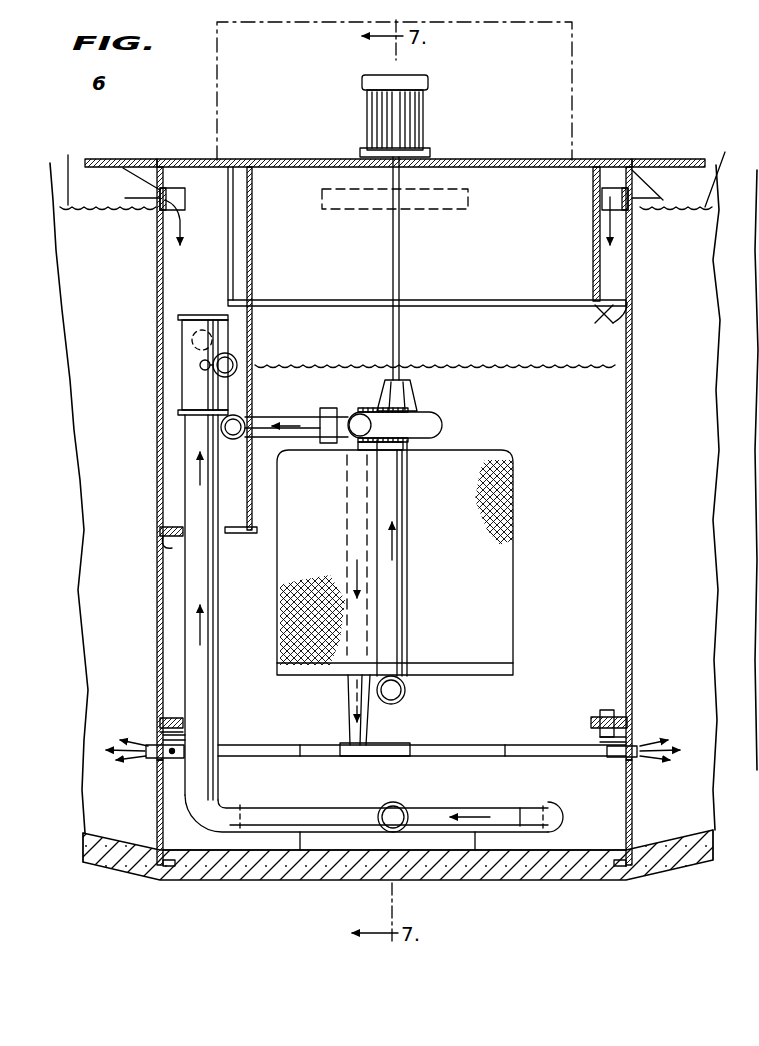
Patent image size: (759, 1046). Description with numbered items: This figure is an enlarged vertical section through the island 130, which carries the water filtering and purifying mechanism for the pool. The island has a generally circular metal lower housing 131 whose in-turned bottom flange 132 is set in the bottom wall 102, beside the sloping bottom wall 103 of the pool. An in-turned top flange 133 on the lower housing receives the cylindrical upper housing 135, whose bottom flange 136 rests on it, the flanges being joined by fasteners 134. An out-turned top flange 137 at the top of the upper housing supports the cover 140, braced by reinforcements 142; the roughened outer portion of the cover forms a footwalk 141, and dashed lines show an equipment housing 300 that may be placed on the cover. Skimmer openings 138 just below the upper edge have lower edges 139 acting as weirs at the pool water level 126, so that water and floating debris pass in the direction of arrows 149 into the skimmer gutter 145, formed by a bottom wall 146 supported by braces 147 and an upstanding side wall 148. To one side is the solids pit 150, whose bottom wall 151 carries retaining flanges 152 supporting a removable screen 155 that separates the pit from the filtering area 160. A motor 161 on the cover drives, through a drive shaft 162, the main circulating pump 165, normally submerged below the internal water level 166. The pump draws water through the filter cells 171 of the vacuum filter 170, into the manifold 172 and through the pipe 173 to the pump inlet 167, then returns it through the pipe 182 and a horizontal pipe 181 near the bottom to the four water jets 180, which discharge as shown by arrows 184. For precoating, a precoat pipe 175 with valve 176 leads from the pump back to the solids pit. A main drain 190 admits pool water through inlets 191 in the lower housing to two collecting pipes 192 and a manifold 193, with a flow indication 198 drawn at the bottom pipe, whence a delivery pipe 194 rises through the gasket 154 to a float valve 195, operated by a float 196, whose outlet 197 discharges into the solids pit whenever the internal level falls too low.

The equipment housing 300 is at (580, 61).
The island 130 is at (594, 117).
The cover 140 is at (283, 155).
The footwalk 141 is at (148, 158).
The water level 126 is at (396, 169).
The top flange 137 is at (670, 168).
The reinforcements 142 is at (140, 175).
The lower edge 139 is at (183, 202).
The arrows 149 is at (180, 216).
The skimmer openings 138 is at (157, 210).
The side wall 148 is at (593, 244).
The skimmer gutter 145 is at (614, 283).
The bottom wall 146 is at (613, 312).
The braces 147 is at (613, 314).
The solids pit 150 is at (185, 278).
The screen 155 is at (253, 350).
The float valve 195 is at (180, 357).
The outlet 197 is at (168, 338).
The float 196 is at (214, 375).
The gasket 154 is at (183, 518).
The delivery pipe 194 is at (216, 690).
The precoat pipe 175 is at (268, 415).
The valve 176 is at (332, 408).
The main circulating pump 165 is at (446, 417).
The inlet 167 is at (417, 444).
The drive shaft 162 is at (402, 240).
The motor 161 is at (428, 114).
The water level 166 is at (478, 364).
The filtering area 160 is at (568, 469).
The vacuum filter 170 is at (519, 530).
The filter cells 171 is at (500, 583).
The pipe 173 is at (407, 605).
The manifold 172 is at (407, 693).
The pipe 182 is at (372, 712).
The manifold pipe 181 is at (255, 747).
The water jets 180 is at (147, 766).
The arrows 184 is at (117, 741).
The bottom flange 136 is at (177, 716).
The fasteners 134 is at (612, 712).
The top flange 133 is at (152, 733).
The upper housing 135 is at (156, 626).
The lower housing 131 is at (156, 810).
The bottom flange 132 is at (167, 868).
The bottom wall 102 is at (263, 876).
The sloping bottom wall 103 is at (103, 866).
The bottom wall 151 is at (158, 548).
The retaining flanges 152 is at (252, 534).
The main drain 190 is at (426, 788).
The inlets 191 is at (248, 806).
The manifold 193 is at (388, 800).
The flow indicator 198 is at (523, 830).
The collecting pipes 192 is at (311, 836).